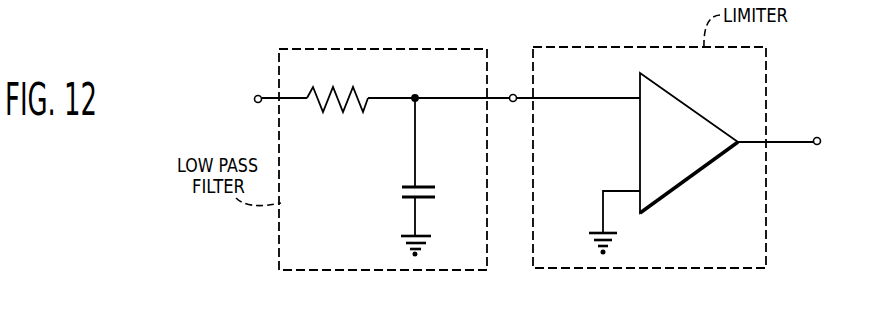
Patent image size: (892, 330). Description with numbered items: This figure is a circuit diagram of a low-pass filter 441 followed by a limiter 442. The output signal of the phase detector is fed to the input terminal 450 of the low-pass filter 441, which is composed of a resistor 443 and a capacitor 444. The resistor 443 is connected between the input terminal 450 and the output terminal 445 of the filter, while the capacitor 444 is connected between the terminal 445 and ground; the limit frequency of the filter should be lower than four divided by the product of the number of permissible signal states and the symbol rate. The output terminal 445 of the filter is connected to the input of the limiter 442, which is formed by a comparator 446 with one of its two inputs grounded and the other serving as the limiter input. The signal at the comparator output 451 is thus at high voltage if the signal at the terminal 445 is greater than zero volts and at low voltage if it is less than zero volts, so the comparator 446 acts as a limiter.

The low-pass filter 441 is at (407, 47).
The limiter 442 is at (645, 46).
The resistor 443 is at (336, 88).
The capacitor 444 is at (405, 186).
The output terminal 445 is at (513, 94).
The comparator 446 is at (692, 153).
The input terminal 450 is at (260, 96).
The comparator output 451 is at (830, 123).